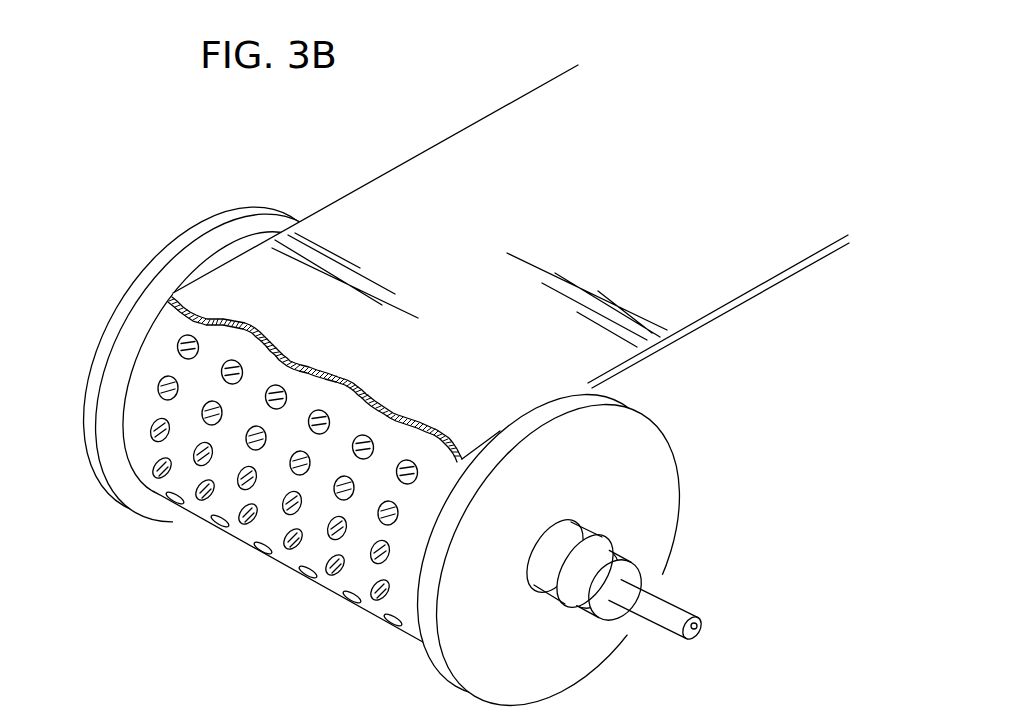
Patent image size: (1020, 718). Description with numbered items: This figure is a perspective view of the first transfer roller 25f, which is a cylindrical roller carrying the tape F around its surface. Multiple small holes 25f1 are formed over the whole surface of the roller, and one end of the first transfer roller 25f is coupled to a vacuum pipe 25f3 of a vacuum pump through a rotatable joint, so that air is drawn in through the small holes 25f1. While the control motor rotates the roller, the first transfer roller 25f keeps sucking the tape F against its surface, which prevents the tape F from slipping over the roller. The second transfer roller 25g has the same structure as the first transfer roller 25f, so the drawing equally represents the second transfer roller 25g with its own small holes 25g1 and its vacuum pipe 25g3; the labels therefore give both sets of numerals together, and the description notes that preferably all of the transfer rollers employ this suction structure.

The tape F is at (528, 193).
The first transfer roller 25f is at (434, 441).
The second transfer roller 25g is at (690, 467).
The small holes 25f1 is at (283, 481).
The small holes 25g1 is at (243, 519).
The vacuum pipe 25f3 is at (685, 590).
The vacuum pipe 25g3 is at (672, 613).